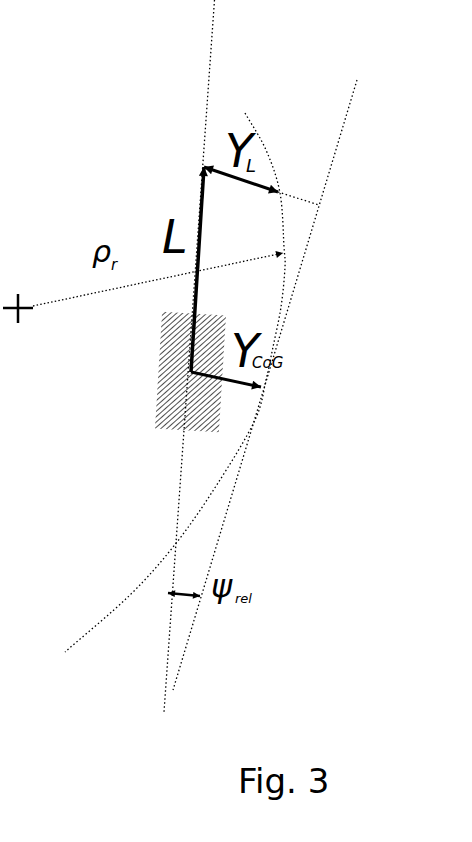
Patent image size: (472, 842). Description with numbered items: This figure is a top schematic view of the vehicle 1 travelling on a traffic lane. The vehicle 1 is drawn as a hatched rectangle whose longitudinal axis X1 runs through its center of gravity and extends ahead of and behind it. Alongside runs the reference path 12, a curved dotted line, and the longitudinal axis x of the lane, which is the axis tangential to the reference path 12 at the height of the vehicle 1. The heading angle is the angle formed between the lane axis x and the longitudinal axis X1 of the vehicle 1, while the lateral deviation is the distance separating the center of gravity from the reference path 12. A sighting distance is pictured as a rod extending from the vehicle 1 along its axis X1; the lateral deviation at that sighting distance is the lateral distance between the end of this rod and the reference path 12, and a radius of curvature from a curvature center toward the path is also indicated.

The vehicle 1 is at (162, 320).
The reference path 12 is at (128, 597).
The longitudinal axis of the vehicle X1 is at (180, 458).
The longitudinal axis of the traffic lane x is at (232, 486).